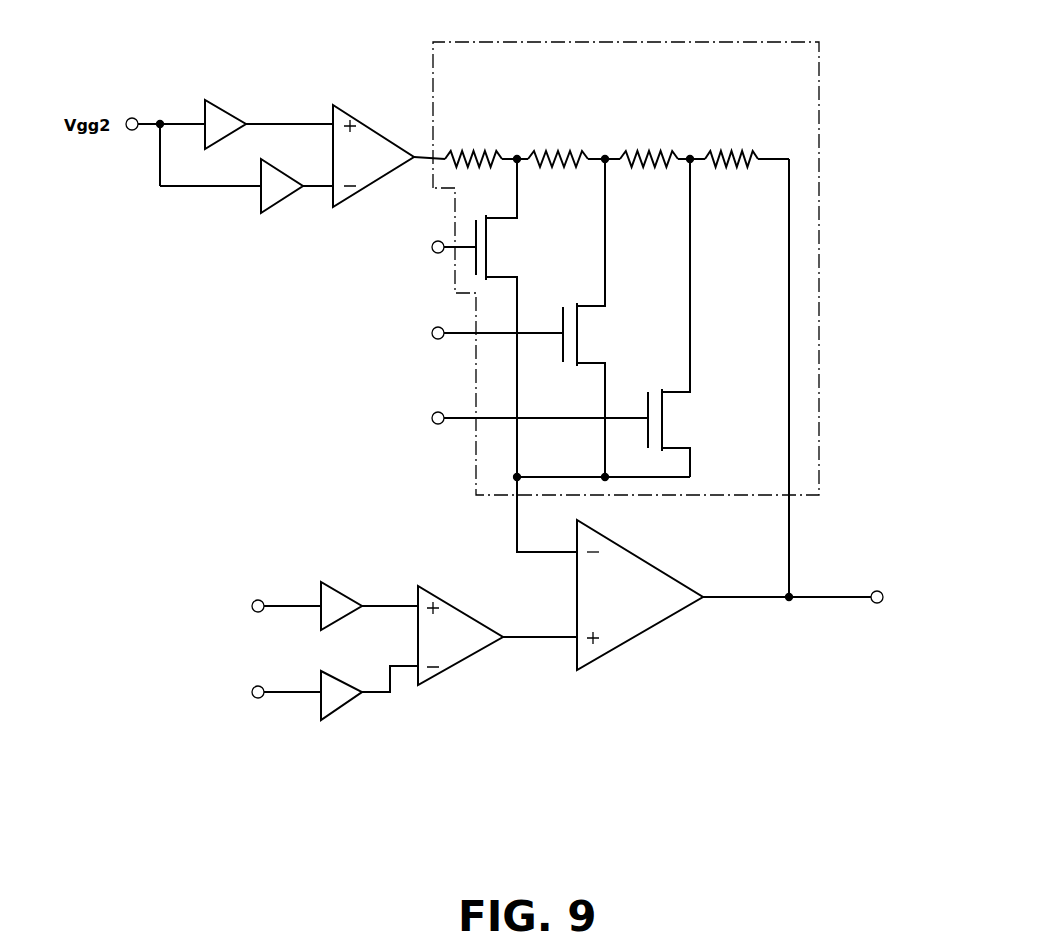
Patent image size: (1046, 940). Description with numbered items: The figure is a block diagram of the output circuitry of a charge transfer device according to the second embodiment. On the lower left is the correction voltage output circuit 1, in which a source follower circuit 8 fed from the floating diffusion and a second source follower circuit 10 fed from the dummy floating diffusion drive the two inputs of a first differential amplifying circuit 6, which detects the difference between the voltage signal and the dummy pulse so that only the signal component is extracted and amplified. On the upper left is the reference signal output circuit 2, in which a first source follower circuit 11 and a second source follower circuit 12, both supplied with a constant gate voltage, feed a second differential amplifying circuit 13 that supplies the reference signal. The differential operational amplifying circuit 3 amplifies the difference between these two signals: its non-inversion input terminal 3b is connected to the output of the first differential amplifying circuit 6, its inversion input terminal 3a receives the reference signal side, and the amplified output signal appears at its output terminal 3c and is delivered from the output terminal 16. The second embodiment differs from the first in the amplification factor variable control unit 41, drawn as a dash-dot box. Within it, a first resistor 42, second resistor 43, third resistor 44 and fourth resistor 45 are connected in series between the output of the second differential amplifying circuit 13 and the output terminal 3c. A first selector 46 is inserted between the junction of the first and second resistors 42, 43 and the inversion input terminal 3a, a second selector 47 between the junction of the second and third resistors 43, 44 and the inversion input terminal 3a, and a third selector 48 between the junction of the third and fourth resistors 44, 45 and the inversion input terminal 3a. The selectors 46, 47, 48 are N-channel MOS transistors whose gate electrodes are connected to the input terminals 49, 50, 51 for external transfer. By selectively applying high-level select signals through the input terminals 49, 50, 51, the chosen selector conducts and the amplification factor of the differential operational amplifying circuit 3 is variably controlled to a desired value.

The correction voltage output circuit 1 is at (345, 650).
The reference signal output circuit 2 is at (309, 129).
The differential operational amplifying circuit 3 is at (622, 614).
The inversion input terminal 3a is at (566, 556).
The non-inversion input terminal 3b is at (568, 645).
The output terminal 3c is at (706, 602).
The first differential amplifying circuit 6 is at (455, 655).
The source follower circuit 8 is at (335, 596).
The second source follower circuit 10 is at (342, 700).
The first source follower circuit 11 is at (223, 115).
The second source follower circuit 12 is at (282, 198).
The second differential amplifying circuit 13 is at (372, 135).
The output terminal 16 is at (875, 605).
The amplification factor variable control unit 41 is at (821, 97).
The first resistor 42 is at (478, 153).
The second resistor 43 is at (563, 153).
The third resistor 44 is at (646, 153).
The fourth resistor 45 is at (732, 153).
The first selector 46 is at (488, 250).
The second selector 47 is at (580, 340).
The third selector 48 is at (664, 423).
The input terminal 49 is at (436, 240).
The input terminal 50 is at (436, 326).
The input terminal 51 is at (437, 411).